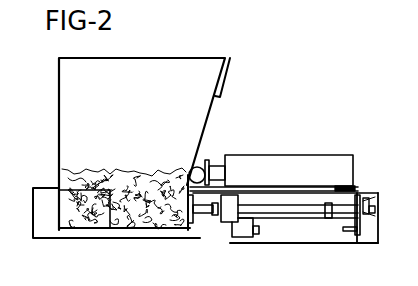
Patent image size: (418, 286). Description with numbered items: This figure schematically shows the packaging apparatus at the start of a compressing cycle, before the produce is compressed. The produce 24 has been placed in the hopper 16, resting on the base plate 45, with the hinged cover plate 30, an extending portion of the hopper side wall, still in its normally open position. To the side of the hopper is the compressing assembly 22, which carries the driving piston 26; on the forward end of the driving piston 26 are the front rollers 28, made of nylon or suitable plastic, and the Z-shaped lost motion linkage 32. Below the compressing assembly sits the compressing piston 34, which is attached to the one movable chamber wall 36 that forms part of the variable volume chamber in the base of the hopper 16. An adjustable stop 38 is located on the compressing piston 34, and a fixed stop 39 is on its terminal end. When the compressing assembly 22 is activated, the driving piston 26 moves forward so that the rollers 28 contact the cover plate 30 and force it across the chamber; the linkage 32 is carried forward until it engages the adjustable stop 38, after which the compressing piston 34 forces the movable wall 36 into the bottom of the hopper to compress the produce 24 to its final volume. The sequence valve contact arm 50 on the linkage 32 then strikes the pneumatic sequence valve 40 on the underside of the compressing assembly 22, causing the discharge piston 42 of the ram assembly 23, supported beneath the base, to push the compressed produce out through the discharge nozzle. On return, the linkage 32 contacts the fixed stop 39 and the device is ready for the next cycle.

The hopper 16 is at (191, 58).
The compressing assembly 22 is at (304, 159).
The discharge or ram assembly 23 is at (116, 237).
The produce 24 is at (119, 171).
The driving piston 26 is at (226, 158).
The front rollers 28 is at (189, 176).
The hinged cover plate 30 is at (213, 110).
The lost motion linkage 32 is at (360, 226).
The compressing piston 34 is at (302, 214).
The movable chamber wall 36 is at (196, 216).
The adjustable stop 38 is at (330, 219).
The fixed stop 39 is at (368, 199).
The pneumatic sequence valve 40 is at (246, 238).
The discharge piston 42 is at (85, 238).
The base plate 45 is at (170, 229).
The sequence valve contact arm 50 is at (358, 233).